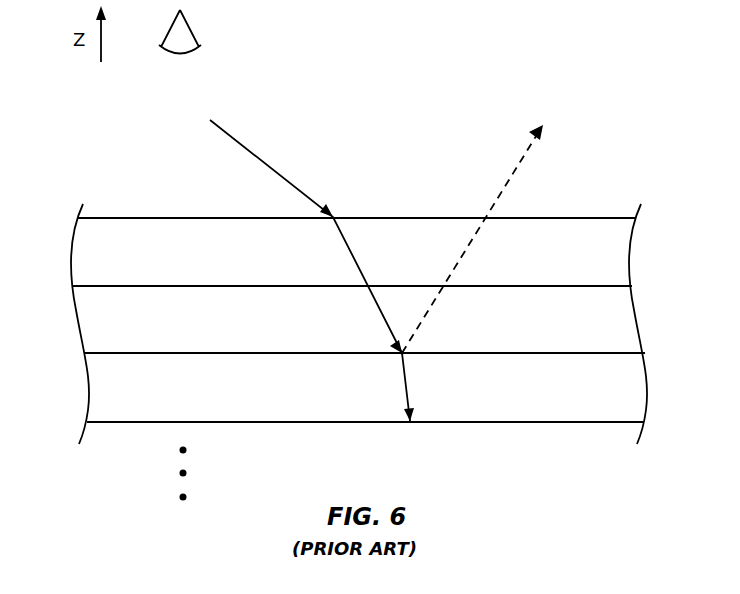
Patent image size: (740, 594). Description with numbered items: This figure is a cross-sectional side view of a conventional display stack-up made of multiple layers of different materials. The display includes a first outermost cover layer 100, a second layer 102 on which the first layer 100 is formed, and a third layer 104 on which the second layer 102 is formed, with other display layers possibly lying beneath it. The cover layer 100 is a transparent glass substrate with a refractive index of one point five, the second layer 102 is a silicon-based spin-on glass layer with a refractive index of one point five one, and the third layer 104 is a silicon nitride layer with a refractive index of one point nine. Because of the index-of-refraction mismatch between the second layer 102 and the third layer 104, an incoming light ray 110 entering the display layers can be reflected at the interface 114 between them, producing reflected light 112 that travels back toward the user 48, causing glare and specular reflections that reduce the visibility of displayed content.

The user 48 is at (189, 24).
The first outermost cover layer 100 is at (79, 252).
The second layer 102 is at (86, 318).
The third layer 104 is at (96, 385).
The incoming light ray 110 is at (258, 152).
The reflected light 112 is at (500, 192).
The interface 114 is at (420, 344).